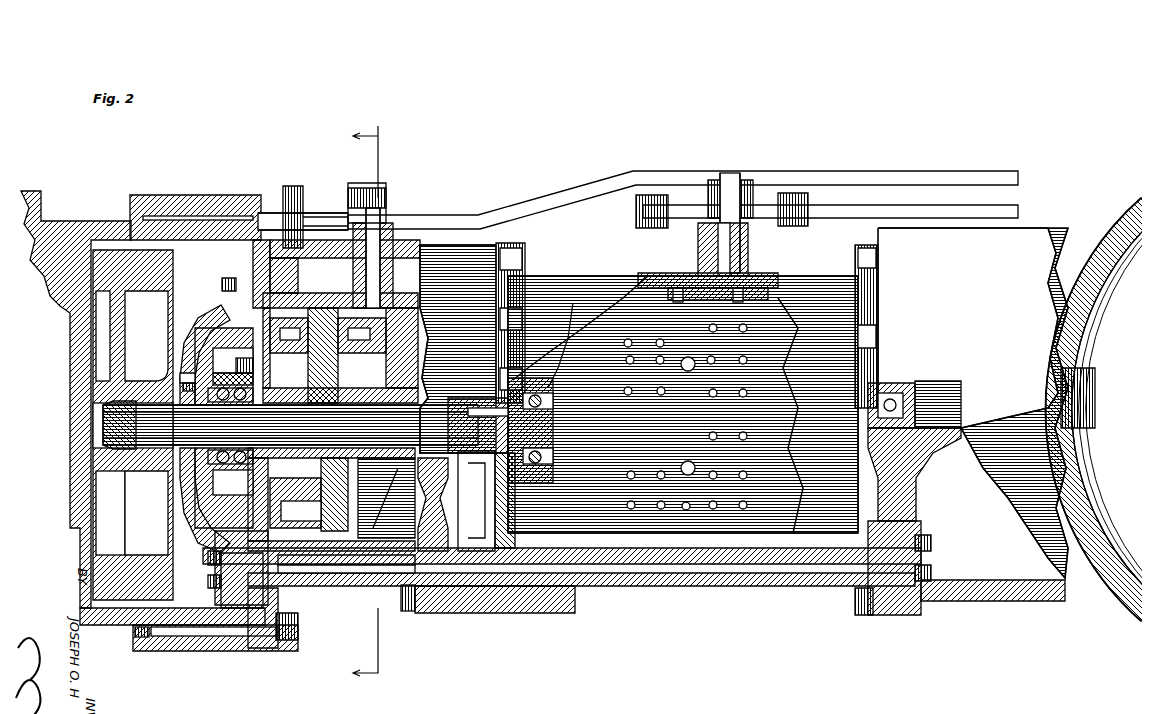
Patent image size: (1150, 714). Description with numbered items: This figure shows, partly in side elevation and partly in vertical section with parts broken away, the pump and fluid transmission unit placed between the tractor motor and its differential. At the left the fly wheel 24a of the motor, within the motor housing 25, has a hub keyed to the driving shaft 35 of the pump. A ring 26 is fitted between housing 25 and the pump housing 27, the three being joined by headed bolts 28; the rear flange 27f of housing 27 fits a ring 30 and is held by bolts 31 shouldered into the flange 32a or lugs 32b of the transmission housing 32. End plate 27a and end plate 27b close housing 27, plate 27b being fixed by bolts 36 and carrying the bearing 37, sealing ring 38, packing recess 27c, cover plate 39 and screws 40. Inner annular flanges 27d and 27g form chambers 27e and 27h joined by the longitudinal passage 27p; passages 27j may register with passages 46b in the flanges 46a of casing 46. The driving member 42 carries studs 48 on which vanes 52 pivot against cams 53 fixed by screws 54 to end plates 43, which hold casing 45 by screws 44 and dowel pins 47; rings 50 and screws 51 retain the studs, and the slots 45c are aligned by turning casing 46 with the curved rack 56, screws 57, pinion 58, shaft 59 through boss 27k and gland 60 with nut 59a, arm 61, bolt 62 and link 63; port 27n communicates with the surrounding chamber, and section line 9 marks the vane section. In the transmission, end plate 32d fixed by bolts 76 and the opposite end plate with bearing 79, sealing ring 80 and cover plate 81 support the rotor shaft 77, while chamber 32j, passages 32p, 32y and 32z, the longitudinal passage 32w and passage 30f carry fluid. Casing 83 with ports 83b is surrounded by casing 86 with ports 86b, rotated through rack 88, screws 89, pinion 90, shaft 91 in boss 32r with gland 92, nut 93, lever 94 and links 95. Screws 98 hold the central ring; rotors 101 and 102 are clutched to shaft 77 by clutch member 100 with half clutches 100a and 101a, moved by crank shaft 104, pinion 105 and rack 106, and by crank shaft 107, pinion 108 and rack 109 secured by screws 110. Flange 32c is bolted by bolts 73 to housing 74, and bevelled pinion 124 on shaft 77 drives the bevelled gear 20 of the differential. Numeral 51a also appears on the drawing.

The section line 9 is at (366, 399).
The driving bevelled gear 20 is at (1100, 245).
The fly wheel 24a is at (97, 248).
The motor housing 25 is at (75, 600).
The ring 26 is at (175, 628).
The pump housing 27 is at (275, 590).
The end plate casting 27a is at (482, 435).
The end plate 27b is at (207, 307).
The packing recess 27c is at (200, 448).
The inner annular flange 27d is at (245, 475).
The annular chamber 27e is at (207, 533).
The flange 27f is at (415, 605).
The inner annular flange 27g is at (434, 504).
The annular chamber 27h is at (395, 612).
The passages 27j is at (418, 305).
The boss 27k is at (345, 264).
The port 27n is at (345, 565).
The longitudinal passage 27p is at (365, 580).
The headed bolts 28 is at (127, 625).
The ring 30 is at (468, 630).
The passage 30f is at (500, 605).
The headed bolts 31 is at (443, 605).
The transmission housing 32 is at (687, 604).
The flange 32a is at (498, 235).
The lugs 32b is at (525, 605).
The flange 32c is at (880, 607).
The end plate casting 32d is at (496, 500).
The chamber 32j is at (915, 520).
The passages 32p is at (900, 498).
The boss 32r is at (690, 235).
The longitudinal passage 32w is at (765, 578).
The passage 32y is at (507, 552).
The passage 32z is at (925, 538).
The driving shaft 35 is at (98, 408).
The headed bolts 36 is at (222, 278).
The bearing 37 is at (155, 482).
The sealing ring 38 is at (190, 345).
The plate 39 is at (173, 365).
The screws 40 is at (176, 378).
The driving member 42 is at (331, 499).
The end plates 43 is at (436, 325).
The screws 44 is at (340, 303).
The cylindrical casing 45 is at (284, 257).
The openings 45c is at (400, 445).
The cylindrical casing 46 is at (325, 557).
The flanges 46a is at (242, 580).
The passages 46b is at (280, 560).
The dowel pins 47 is at (228, 340).
The studs 48 is at (302, 268).
The rings 50 is at (423, 232).
The screws 51 is at (289, 335).
The clutch disc 51a is at (362, 335).
The vanes 52 is at (240, 355).
The cam member 53 is at (340, 355).
The headed screws 54 is at (437, 357).
The curved rack 56 is at (345, 285).
The screws 57 is at (354, 258).
The pinion 58 is at (398, 262).
The shaft 59 is at (385, 218).
The nut 59a is at (372, 185).
The packing gland 60 is at (367, 198).
The arm 61 is at (315, 205).
The bolt 62 is at (285, 178).
The link 63 is at (445, 207).
The bolts 73 is at (847, 600).
The housing 74 is at (935, 593).
The bolts 76 is at (866, 326).
The rotor shaft 77 is at (950, 405).
The bearing 79 is at (914, 474).
The sealing ring 80 is at (920, 385).
The plate 81 is at (950, 445).
The cylindrical casing 83 is at (775, 297).
The ports 83b is at (735, 385).
The casing 86 is at (615, 310).
The ports 86b is at (596, 336).
The rack 88 is at (665, 285).
The screws 89 is at (725, 285).
The pinion 90 is at (755, 268).
The shaft 91 is at (760, 285).
The gland 92 is at (740, 222).
The nut 93 is at (730, 190).
The lever 94 is at (628, 204).
The links 95 is at (838, 210).
The screws 98 is at (675, 405).
The clutch member 100 is at (545, 455).
The half clutch 100a is at (575, 430).
The rotor 101 is at (565, 375).
The half clutch 101a is at (575, 410).
The rotor 102 is at (775, 390).
The crank shaft 104 is at (478, 423).
The mutilated pinion 105 is at (475, 419).
The rack 106 is at (540, 474).
The crank shaft 107 is at (891, 405).
The mutilated pinion 108 is at (900, 417).
The rack 109 is at (805, 470).
The screws 110 is at (832, 473).
The bevelled pinion 124 is at (1085, 375).